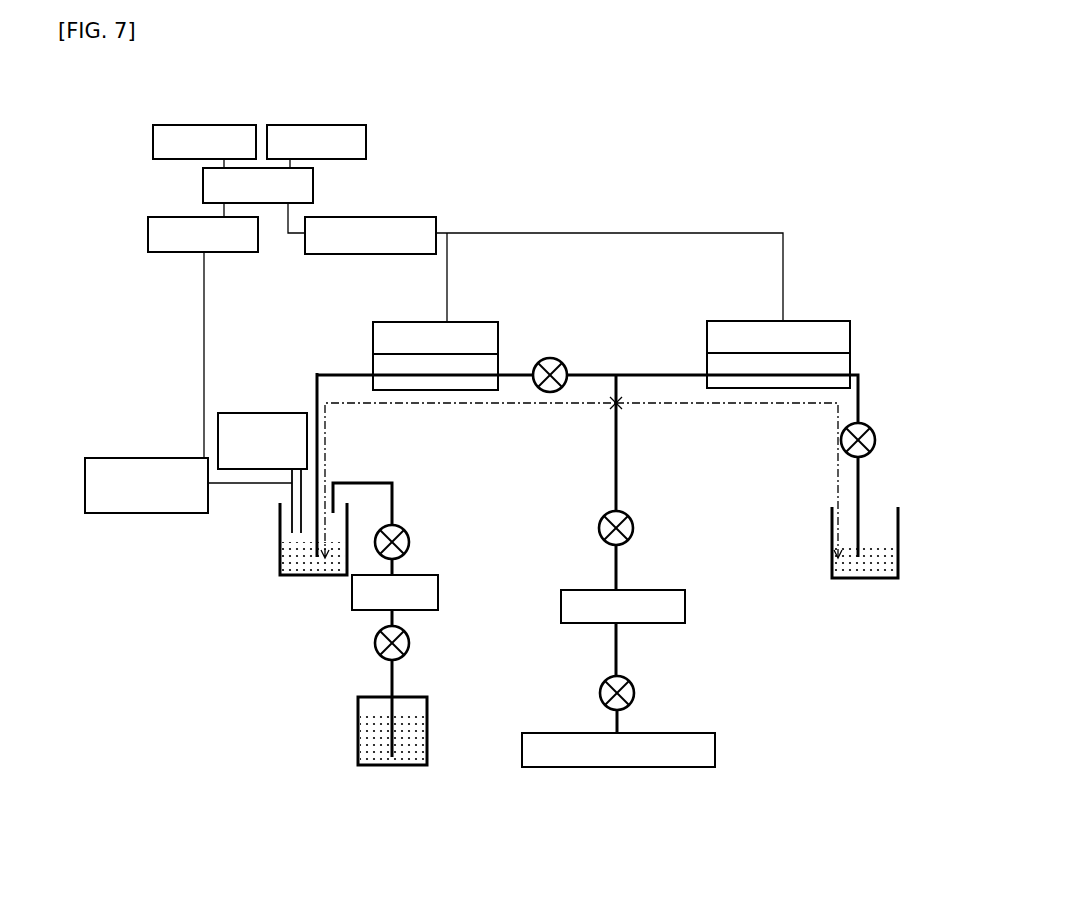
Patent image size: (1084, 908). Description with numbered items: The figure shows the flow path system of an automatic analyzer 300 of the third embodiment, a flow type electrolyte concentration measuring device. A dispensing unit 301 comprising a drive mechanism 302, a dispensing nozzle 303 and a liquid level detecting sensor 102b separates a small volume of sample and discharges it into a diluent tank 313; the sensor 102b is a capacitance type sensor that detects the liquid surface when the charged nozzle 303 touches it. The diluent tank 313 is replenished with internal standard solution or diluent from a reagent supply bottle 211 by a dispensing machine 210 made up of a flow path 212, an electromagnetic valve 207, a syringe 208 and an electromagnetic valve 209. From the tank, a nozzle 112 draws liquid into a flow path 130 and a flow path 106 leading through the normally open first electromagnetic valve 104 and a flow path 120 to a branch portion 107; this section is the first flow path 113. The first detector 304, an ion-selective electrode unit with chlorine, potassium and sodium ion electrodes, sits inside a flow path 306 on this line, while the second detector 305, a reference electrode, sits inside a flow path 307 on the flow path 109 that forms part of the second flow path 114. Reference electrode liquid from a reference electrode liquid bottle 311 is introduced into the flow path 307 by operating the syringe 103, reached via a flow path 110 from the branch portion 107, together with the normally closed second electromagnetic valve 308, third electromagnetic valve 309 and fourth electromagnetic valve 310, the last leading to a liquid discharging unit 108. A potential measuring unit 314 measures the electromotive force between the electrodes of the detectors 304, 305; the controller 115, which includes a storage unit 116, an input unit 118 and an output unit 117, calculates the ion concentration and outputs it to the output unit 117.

The output unit 117 is at (204, 116).
The input unit 118 is at (315, 116).
The controller 115 is at (204, 185).
The storage unit 116 is at (158, 234).
The potential measuring unit 314 is at (370, 212).
The automatic analyzer 300 is at (665, 154).
The first detector 304 is at (435, 313).
The second detector 305 is at (778, 313).
The flow path 306 is at (435, 403).
The flow path 307 is at (778, 403).
The flow path 130 is at (345, 334).
The nozzle 112 is at (353, 465).
The flow path 106 is at (453, 334).
The first electromagnetic valve 104 is at (550, 335).
The flow path 120 is at (591, 334).
The branch portion 107 is at (619, 348).
The flow path 109 is at (737, 357).
The flow path 110 is at (653, 456).
The first flow path 113 is at (471, 477).
The second flow path 114 is at (729, 480).
The dispensing unit 301 is at (221, 355).
The liquid level detecting sensor 102b is at (146, 447).
The drive mechanism 302 is at (262, 404).
The dispensing nozzle 303 is at (254, 501).
The diluent tank 313 is at (282, 554).
The flow path 212 is at (398, 503).
The electromagnetic valve 207 is at (428, 538).
The syringe 208 is at (431, 592).
The electromagnetic valve 209 is at (429, 639).
The dispensing machine 210 is at (334, 707).
The reagent supply bottle 211 is at (404, 742).
The third electromagnetic valve 309 is at (666, 528).
The syringe 103 is at (656, 610).
The fourth electromagnetic valve 310 is at (665, 693).
The liquid discharging unit 108 is at (618, 768).
The second electromagnetic valve 308 is at (892, 490).
The reference electrode liquid bottle 311 is at (845, 571).